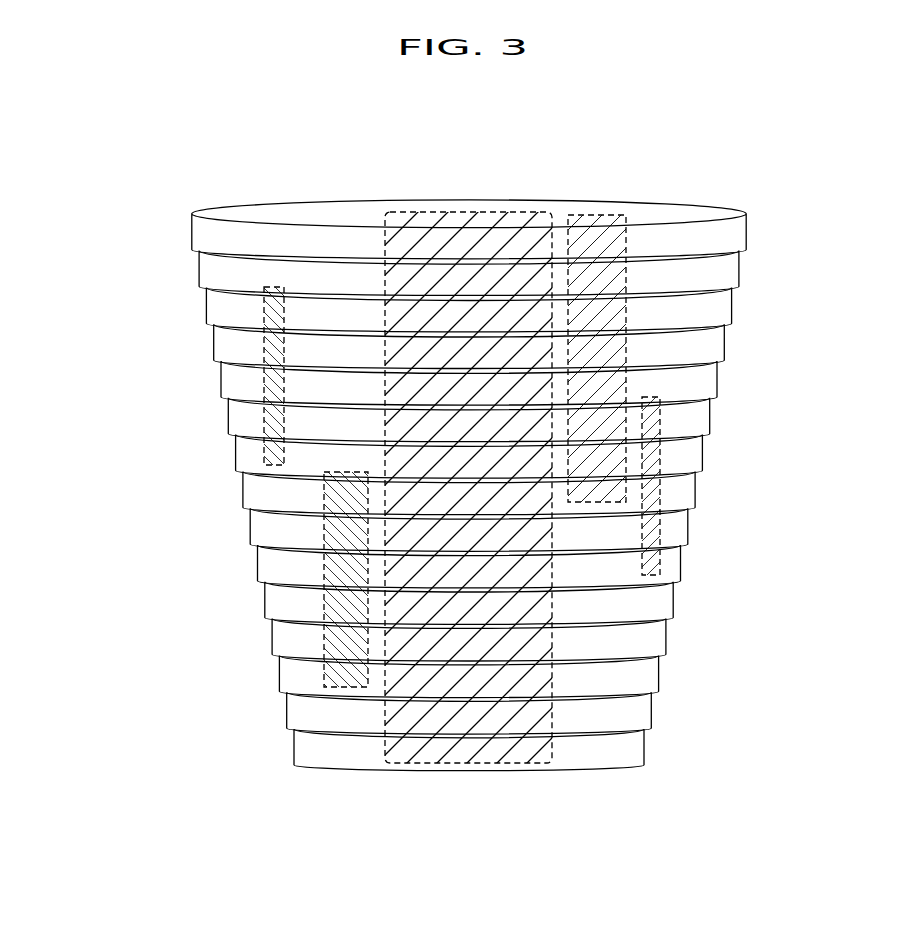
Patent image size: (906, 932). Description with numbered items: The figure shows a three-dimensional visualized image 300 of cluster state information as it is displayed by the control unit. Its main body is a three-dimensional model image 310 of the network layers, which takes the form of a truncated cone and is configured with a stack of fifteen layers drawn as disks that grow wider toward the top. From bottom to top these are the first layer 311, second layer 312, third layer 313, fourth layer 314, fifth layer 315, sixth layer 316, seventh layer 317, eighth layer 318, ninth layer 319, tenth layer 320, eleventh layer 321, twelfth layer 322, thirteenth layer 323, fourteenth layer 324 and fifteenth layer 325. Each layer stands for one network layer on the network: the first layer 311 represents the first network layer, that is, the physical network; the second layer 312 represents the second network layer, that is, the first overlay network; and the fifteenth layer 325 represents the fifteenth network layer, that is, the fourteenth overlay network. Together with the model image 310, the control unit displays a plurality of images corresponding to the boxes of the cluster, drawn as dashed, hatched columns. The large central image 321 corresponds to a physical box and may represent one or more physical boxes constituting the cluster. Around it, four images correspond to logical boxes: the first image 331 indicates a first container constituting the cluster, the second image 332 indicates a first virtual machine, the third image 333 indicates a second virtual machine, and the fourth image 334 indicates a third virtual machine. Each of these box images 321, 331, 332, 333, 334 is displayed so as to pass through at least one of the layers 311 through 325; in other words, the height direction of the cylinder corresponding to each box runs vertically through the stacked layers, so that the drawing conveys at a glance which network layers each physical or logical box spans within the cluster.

The three-dimensional visualized image 300 is at (221, 113).
The three-dimensional model image 310 is at (120, 255).
The first layer 311 is at (304, 747).
The second layer 312 is at (297, 710).
The third layer 313 is at (289, 673).
The fourth layer 314 is at (282, 637).
The fifth layer 315 is at (275, 600).
The sixth layer 316 is at (268, 563).
The seventh layer 317 is at (260, 526).
The eighth layer 318 is at (253, 489).
The ninth layer 319 is at (246, 453).
The tenth layer 320 is at (238, 416).
The image corresponding to a physical box 321 is at (231, 379).
The twelfth layer 322 is at (224, 342).
The thirteenth layer 323 is at (216, 305).
The fourteenth layer 324 is at (209, 269).
The fifteenth layer 325 is at (202, 232).
The first image 331 is at (626, 240).
The second image 332 is at (661, 458).
The third image 333 is at (347, 688).
The fourth image 334 is at (284, 313).